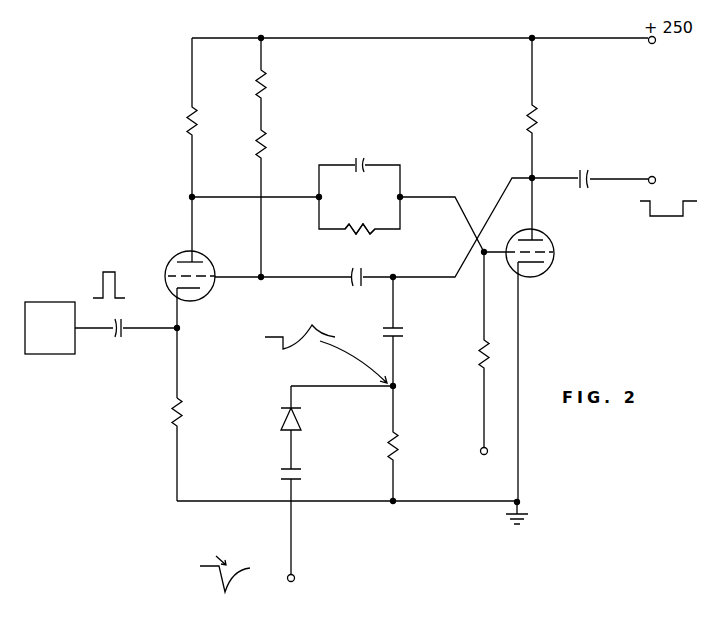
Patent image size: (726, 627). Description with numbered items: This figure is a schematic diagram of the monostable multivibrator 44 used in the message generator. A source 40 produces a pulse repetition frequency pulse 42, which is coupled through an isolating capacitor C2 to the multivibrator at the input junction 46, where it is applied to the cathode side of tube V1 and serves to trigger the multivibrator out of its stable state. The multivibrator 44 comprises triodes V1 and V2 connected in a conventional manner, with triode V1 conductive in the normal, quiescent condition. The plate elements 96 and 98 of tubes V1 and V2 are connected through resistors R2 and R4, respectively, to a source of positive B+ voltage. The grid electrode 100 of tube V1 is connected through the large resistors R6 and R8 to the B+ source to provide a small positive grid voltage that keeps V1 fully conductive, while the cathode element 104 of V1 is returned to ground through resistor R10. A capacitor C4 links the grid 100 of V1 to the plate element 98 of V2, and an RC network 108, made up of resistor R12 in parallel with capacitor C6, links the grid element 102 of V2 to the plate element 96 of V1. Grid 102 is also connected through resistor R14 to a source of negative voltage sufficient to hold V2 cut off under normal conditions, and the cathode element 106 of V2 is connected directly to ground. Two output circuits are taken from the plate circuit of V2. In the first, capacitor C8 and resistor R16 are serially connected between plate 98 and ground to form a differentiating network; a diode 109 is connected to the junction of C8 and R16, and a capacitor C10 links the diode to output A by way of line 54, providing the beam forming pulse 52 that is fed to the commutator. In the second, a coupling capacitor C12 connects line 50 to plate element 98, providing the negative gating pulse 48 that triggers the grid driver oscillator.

The source 40 is at (72, 355).
The pulse repetition frequency pulse 42 is at (102, 282).
The monostable multivibrator 44 is at (399, 99).
The input junction 46 is at (170, 333).
The negative gating pulse 48 is at (673, 222).
The line 50 is at (636, 185).
The beam forming pulse 52 is at (220, 582).
The line 54 is at (294, 548).
The plate element 96 is at (183, 259).
The plate element 98 is at (531, 240).
The grid electrode 100 is at (214, 285).
The grid element 102 is at (549, 253).
The cathode element 104 is at (195, 290).
The cathode element 106 is at (536, 263).
The RC network 108 is at (359, 198).
The diode 109 is at (280, 416).
The triode V1 is at (206, 256).
The triode V2 is at (553, 265).
The resistor R2 is at (199, 125).
The resistor R4 is at (538, 122).
The resistor R6 is at (267, 88).
The resistor R8 is at (267, 150).
The resistor R10 is at (182, 419).
The resistor R12 is at (362, 235).
The resistor R14 is at (478, 355).
The resistor R16 is at (399, 452).
The isolating capacitor C2 is at (117, 338).
The capacitor C4 is at (354, 288).
The capacitor C6 is at (358, 160).
The capacitor C8 is at (402, 327).
The capacitor C10 is at (280, 474).
The coupling capacitor C12 is at (589, 173).